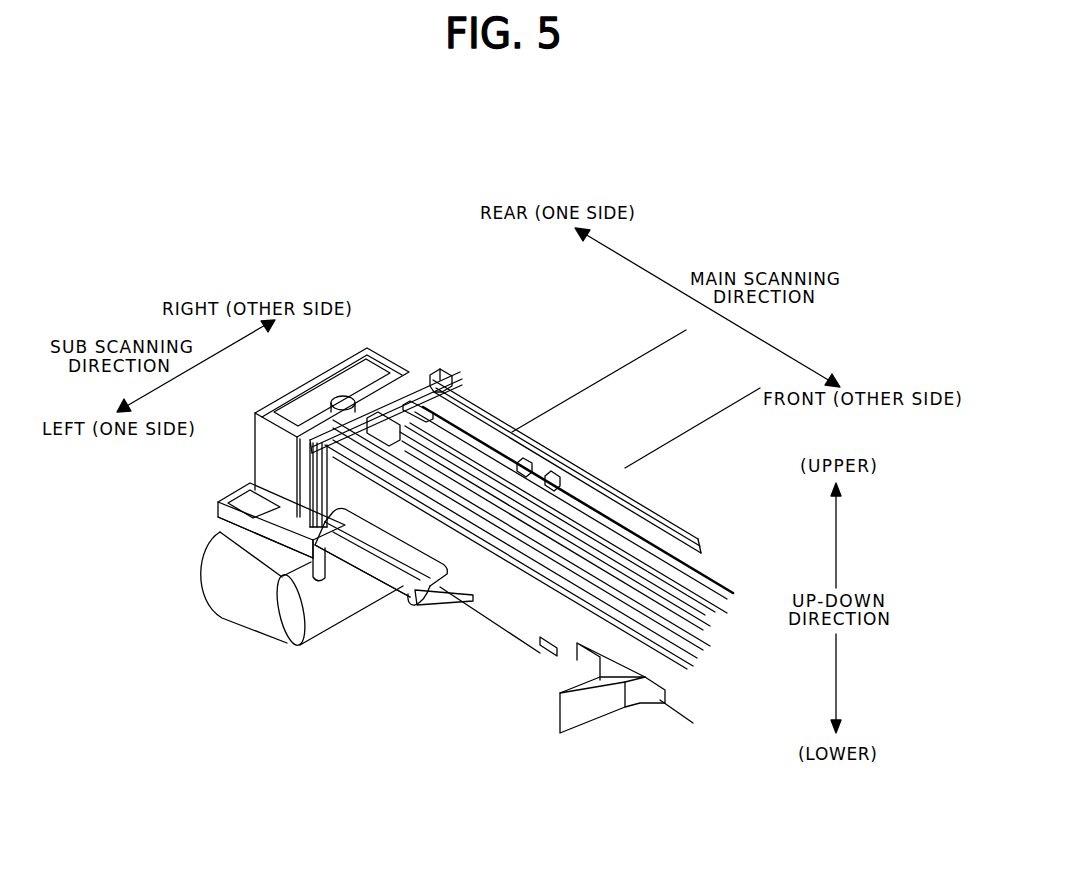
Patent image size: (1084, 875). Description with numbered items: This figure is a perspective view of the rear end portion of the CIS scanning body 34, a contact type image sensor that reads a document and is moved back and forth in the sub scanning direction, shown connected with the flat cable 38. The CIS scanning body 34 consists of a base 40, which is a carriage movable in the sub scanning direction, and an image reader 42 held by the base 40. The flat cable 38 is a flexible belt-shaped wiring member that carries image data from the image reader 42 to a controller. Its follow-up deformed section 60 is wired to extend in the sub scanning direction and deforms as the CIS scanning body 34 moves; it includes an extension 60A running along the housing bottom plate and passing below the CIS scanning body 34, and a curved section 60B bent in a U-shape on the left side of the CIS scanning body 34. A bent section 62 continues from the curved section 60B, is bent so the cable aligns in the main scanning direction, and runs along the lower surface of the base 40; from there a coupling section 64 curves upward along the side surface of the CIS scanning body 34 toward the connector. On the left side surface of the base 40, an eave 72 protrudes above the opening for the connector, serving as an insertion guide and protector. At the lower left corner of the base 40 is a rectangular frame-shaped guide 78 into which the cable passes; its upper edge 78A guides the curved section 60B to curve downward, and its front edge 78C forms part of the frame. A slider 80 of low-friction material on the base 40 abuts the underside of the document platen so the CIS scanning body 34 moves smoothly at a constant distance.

The CIS scanning body 34 is at (488, 645).
The flat cable 38 is at (588, 376).
The base 40 is at (525, 625).
The image reader 42 is at (653, 530).
The follow-up deformed section 60 is at (289, 635).
The extension 60A is at (317, 622).
The curved section 60B is at (245, 600).
The bent section 62 is at (410, 622).
The coupling section 64 is at (400, 568).
The eave 72 is at (397, 552).
The guide 78 is at (248, 497).
The upper edge 78A is at (225, 523).
The front edge 78C is at (298, 573).
The slider 80 is at (328, 410).